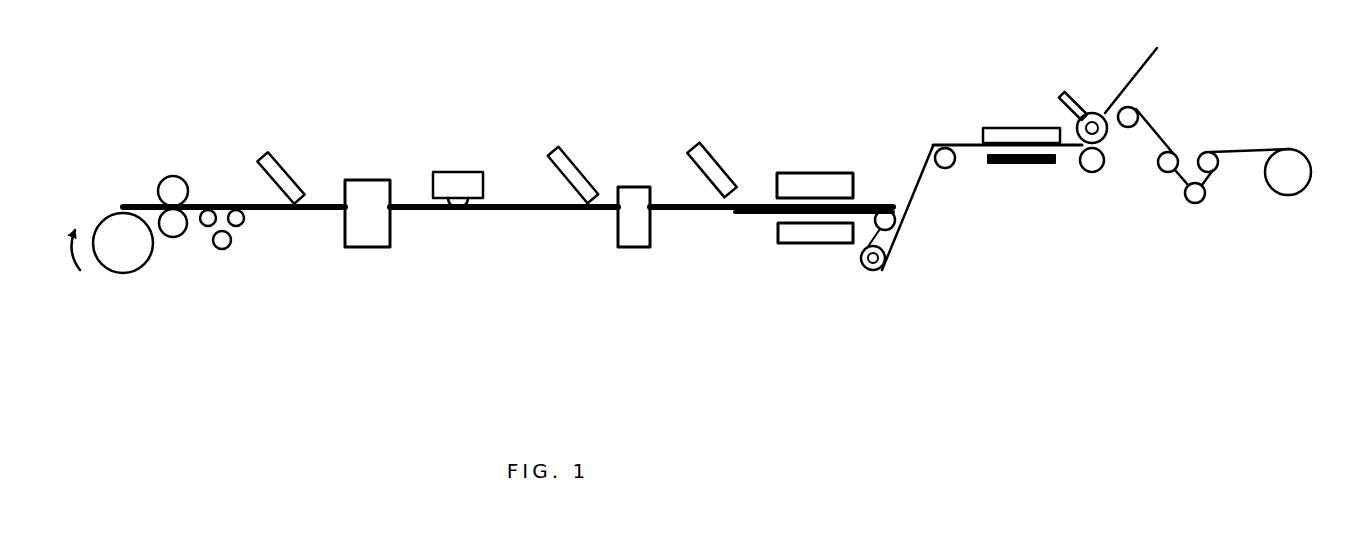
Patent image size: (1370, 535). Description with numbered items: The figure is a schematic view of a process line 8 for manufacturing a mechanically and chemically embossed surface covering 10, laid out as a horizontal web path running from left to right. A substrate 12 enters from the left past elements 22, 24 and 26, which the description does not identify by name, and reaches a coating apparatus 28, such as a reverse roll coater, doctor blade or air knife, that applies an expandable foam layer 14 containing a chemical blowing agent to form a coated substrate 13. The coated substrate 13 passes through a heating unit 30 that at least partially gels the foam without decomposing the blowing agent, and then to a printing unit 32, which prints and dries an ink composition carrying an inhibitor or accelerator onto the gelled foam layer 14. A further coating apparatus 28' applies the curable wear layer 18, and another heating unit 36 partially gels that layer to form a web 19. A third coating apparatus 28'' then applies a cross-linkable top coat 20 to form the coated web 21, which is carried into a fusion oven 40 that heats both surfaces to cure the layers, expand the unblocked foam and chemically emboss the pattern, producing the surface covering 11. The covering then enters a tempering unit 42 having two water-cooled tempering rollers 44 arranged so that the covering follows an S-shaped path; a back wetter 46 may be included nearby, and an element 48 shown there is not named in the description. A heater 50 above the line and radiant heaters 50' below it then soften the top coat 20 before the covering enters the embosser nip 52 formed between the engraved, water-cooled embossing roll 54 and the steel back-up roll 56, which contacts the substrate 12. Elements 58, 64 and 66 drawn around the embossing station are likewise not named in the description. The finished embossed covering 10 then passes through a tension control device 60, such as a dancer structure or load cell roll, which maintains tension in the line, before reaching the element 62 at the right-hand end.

The web processing system 8 is at (768, 66).
The mechanically and chemically embossed surface covering 10 is at (497, 203).
The surface covering 11 is at (866, 193).
The substrate 12 is at (132, 203).
The coated substrate 13 is at (315, 233).
The expandable foam layer 14 is at (320, 198).
The curable wear layer 18 is at (670, 200).
The web 19 is at (670, 227).
The top coat 20 is at (753, 200).
The coated web 21 is at (745, 227).
The supply roll 22 is at (137, 274).
The nip rollers 24 is at (167, 157).
The idler rollers 26 is at (232, 270).
The coating apparatus 28 is at (280, 161).
The second treatment station 28' is at (564, 150).
The third treatment station 28'' is at (700, 148).
The heating unit 30 is at (367, 180).
The printing unit 32 is at (458, 172).
The heating unit 36 is at (632, 247).
The fusion oven 40 is at (805, 173).
The tempering unit 42 is at (912, 103).
The tempering roller 44 is at (890, 197).
The back wetter 46 is at (950, 167).
The roller 48 is at (867, 272).
The heater 50 is at (1021, 94).
The radiant heaters 50' is at (1021, 210).
The embosser nip 52 is at (1073, 152).
The embossing roll 54 is at (1147, 72).
The back-up roll 56 is at (1097, 173).
The roller 58 is at (1130, 130).
The tension control device 60 is at (1200, 120).
The take-up roll 62 is at (1303, 192).
The arm 64 is at (1102, 110).
The blade 66 is at (1067, 90).